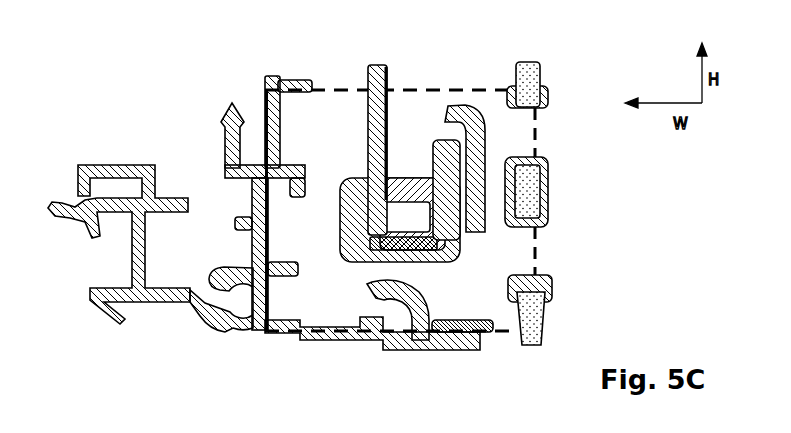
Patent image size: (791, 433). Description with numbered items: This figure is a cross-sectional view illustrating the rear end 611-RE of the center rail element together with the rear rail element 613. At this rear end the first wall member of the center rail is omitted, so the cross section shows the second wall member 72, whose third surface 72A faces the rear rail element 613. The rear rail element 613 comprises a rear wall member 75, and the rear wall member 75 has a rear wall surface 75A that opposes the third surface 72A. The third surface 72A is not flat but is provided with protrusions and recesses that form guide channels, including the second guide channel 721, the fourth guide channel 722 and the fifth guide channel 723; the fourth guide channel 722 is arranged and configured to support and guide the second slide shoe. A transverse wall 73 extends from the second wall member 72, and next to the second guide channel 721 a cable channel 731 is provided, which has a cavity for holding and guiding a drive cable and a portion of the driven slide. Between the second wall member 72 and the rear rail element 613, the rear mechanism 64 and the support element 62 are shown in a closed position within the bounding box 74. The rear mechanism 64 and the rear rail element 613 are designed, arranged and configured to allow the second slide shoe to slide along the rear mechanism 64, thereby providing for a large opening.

The rear end of the center rail element 611-RE is at (189, 145).
The second wall member 72 is at (270, 78).
The fifth guide channel 723 is at (292, 122).
The fourth guide channel 722 is at (282, 233).
The third surface 72A is at (305, 213).
The second guide channel 721 is at (262, 333).
The transverse wall 73 is at (308, 342).
The cable channel 731 is at (398, 313).
The bounding box 74 is at (422, 88).
The rear wall surface 75A is at (491, 80).
The rear wall member 75 is at (540, 72).
The rear rail element 613 is at (590, 176).
The support element 62 is at (373, 138).
The rear mechanism 64 is at (479, 245).